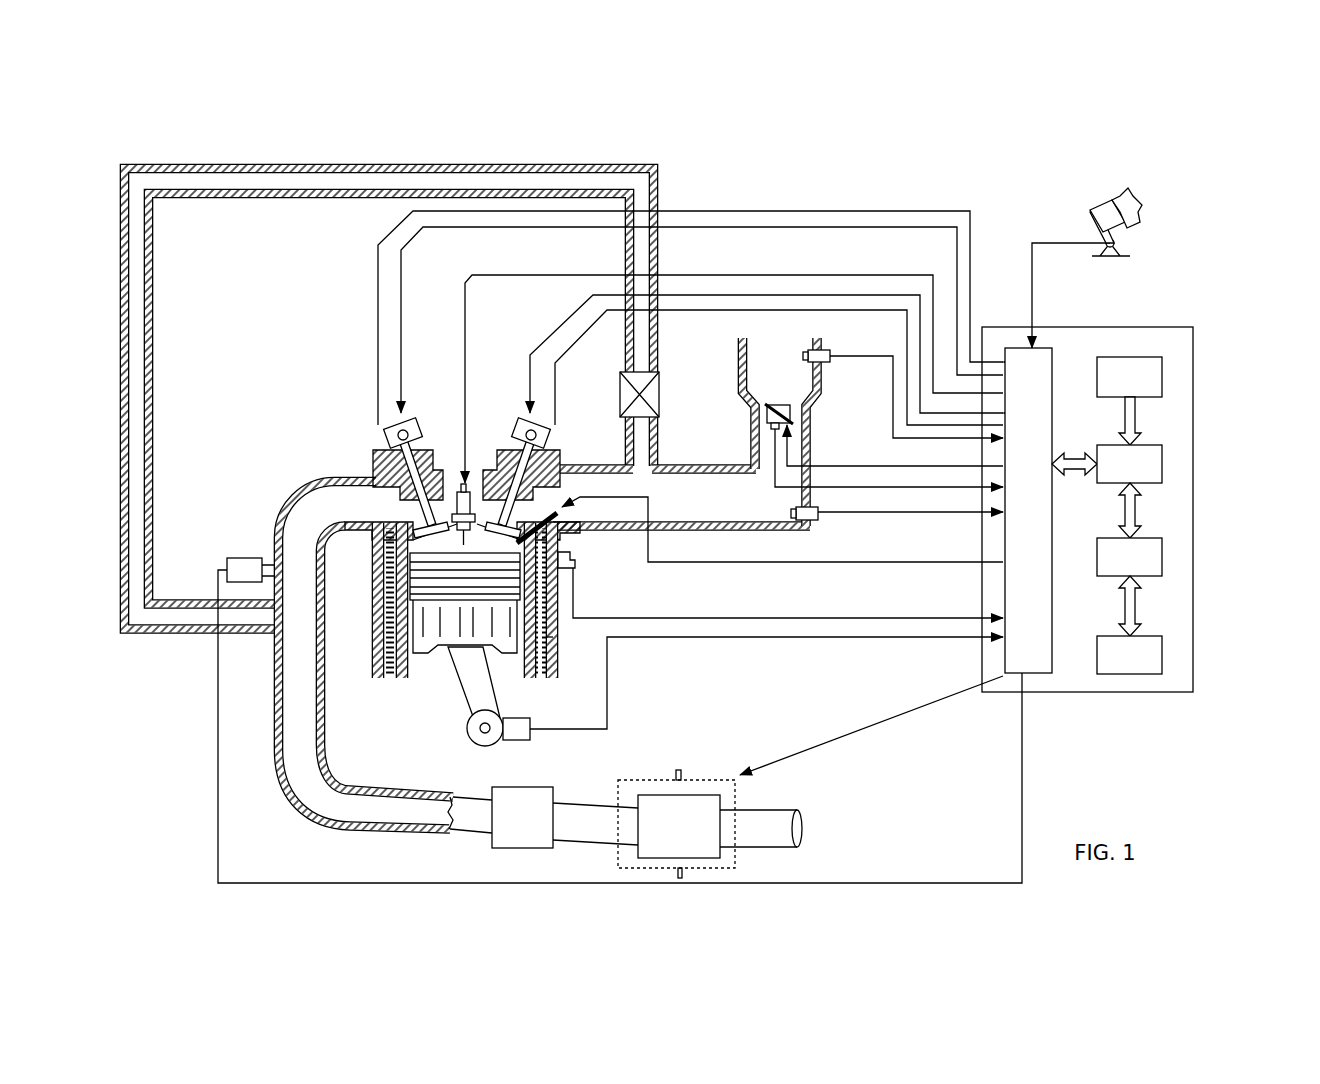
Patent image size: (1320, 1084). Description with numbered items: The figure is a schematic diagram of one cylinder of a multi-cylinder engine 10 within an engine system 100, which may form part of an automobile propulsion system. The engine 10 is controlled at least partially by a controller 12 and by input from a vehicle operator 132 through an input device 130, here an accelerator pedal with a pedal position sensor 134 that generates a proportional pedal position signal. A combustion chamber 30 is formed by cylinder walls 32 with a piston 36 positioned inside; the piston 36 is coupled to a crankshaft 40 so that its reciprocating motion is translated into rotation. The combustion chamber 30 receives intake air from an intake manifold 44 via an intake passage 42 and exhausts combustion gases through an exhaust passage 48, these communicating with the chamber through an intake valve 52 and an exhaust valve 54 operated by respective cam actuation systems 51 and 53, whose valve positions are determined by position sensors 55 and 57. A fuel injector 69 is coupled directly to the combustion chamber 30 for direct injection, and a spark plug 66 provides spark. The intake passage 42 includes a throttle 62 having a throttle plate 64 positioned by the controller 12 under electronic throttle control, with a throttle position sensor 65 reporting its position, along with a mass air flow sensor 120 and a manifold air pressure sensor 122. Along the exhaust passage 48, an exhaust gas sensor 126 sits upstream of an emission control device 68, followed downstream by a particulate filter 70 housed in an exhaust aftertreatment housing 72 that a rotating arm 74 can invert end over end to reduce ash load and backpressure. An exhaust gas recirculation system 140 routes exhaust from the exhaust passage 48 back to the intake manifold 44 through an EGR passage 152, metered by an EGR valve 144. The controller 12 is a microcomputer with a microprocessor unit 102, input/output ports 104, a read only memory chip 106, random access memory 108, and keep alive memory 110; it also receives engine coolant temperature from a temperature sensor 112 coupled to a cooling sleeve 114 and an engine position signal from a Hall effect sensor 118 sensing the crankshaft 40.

The engine 10 is at (308, 398).
The controller 12 is at (1193, 327).
The combustion chamber 30 is at (438, 542).
The cylinder walls 32 is at (415, 667).
The piston 36 is at (450, 632).
The crankshaft 40 is at (476, 747).
The intake passage 42 is at (790, 384).
The intake manifold 44 is at (727, 511).
The exhaust passage 48 is at (352, 514).
The cam actuation system 51 is at (520, 420).
The intake valve 52 is at (508, 508).
The cam actuation system 53 is at (410, 420).
The exhaust valve 54 is at (410, 478).
The position sensor 55 is at (538, 437).
The position sensor 57 is at (387, 428).
The throttle 62 is at (800, 412).
The throttle plate 64 is at (767, 410).
The throttle position sensor 65 is at (772, 428).
The spark plug 66 is at (466, 480).
The emission control device 68 is at (565, 817).
The fuel injector 69 is at (563, 543).
The particulate filter 70 is at (720, 826).
The exhaust aftertreatment housing 72 is at (702, 780).
The rotating arm 74 is at (678, 770).
The engine system 100 is at (1225, 140).
The microprocessor unit 102 is at (1163, 457).
The input/output ports 104 is at (1053, 357).
The read only memory chip 106 is at (1163, 372).
The random access memory 108 is at (1163, 555).
The keep alive memory 110 is at (1163, 653).
The temperature sensor 112 is at (573, 570).
The cooling sleeve 114 is at (547, 637).
The Hall effect sensor 118 is at (517, 742).
The mass air flow sensor 120 is at (822, 348).
The manifold air pressure sensor 122 is at (818, 520).
The exhaust gas sensor 126 is at (225, 557).
The input device 130 is at (1092, 220).
The vehicle operator 132 is at (1135, 208).
The pedal position sensor 134 is at (1120, 243).
The exhaust gas recirculation system 140 is at (530, 152).
The EGR valve 144 is at (659, 398).
The EGR passage 152 is at (383, 165).